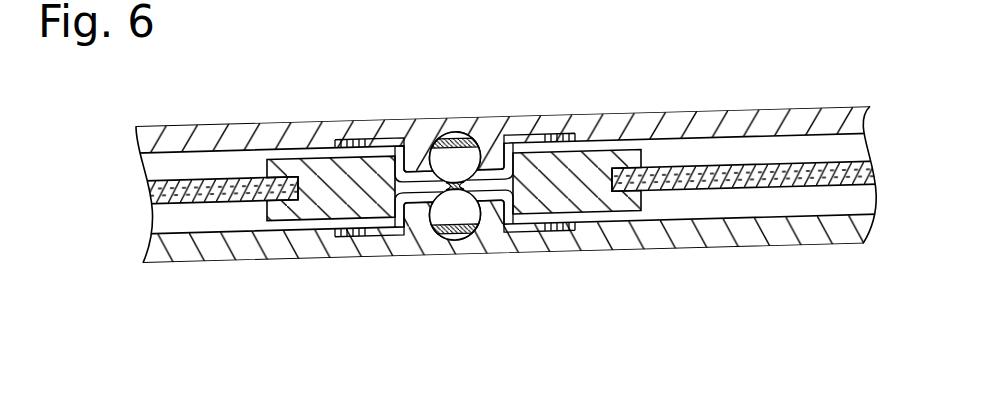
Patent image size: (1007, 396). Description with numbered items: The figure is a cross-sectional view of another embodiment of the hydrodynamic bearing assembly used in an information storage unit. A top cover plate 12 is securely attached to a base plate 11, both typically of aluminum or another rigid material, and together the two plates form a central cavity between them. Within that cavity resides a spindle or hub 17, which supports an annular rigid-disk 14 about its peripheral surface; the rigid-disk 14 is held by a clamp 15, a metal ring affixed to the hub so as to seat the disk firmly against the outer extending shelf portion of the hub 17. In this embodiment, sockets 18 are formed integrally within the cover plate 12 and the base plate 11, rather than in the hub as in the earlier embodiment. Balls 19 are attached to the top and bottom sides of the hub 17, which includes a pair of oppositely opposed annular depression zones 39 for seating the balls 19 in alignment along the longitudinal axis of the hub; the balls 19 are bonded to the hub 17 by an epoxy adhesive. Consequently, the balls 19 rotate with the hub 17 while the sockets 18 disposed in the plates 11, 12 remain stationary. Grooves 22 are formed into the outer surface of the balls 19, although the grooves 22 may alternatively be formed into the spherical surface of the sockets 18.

The base plate 11 is at (773, 245).
The top cover plate 12 is at (195, 123).
The rigid-disk 14 is at (705, 172).
The clamp 15 is at (628, 138).
The hub 17 is at (330, 172).
The sockets 18 is at (400, 138).
The balls 19 is at (466, 160).
The grooves 22 is at (454, 135).
The annular depression zones 39 is at (456, 182).